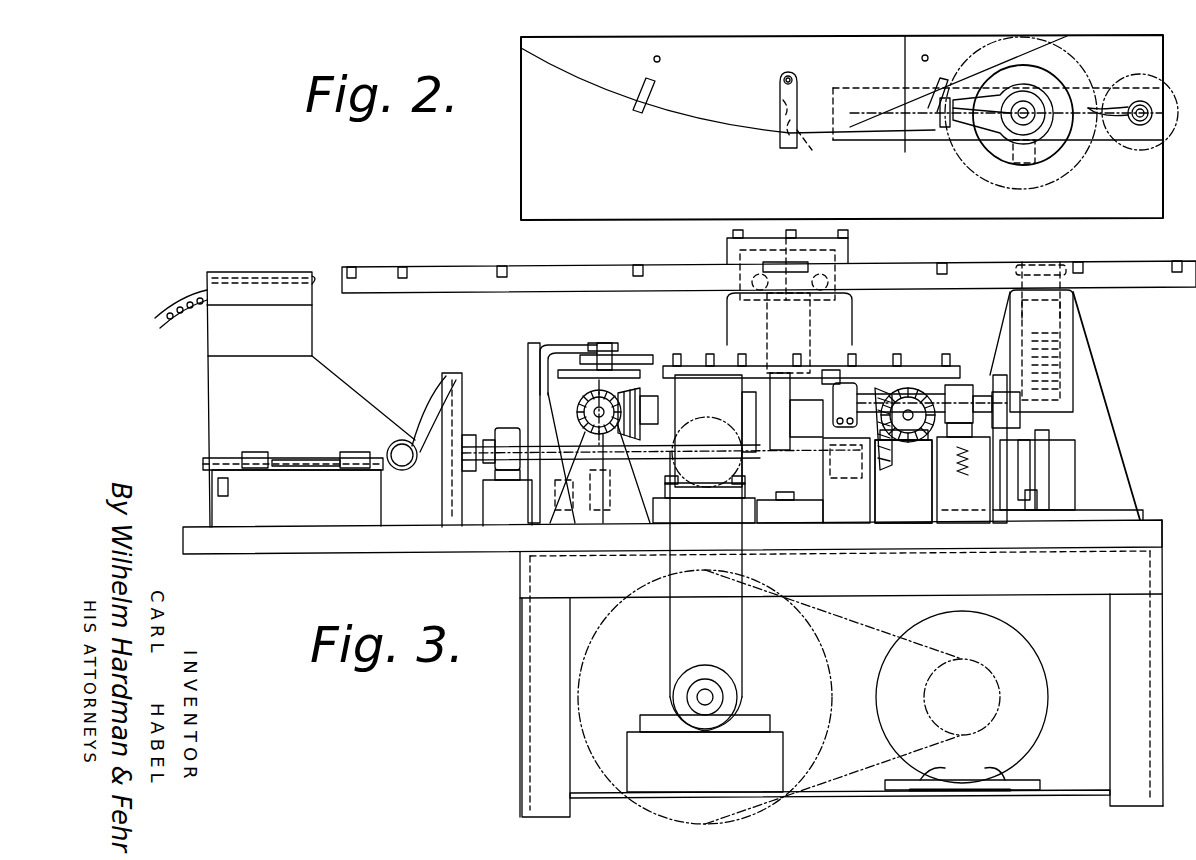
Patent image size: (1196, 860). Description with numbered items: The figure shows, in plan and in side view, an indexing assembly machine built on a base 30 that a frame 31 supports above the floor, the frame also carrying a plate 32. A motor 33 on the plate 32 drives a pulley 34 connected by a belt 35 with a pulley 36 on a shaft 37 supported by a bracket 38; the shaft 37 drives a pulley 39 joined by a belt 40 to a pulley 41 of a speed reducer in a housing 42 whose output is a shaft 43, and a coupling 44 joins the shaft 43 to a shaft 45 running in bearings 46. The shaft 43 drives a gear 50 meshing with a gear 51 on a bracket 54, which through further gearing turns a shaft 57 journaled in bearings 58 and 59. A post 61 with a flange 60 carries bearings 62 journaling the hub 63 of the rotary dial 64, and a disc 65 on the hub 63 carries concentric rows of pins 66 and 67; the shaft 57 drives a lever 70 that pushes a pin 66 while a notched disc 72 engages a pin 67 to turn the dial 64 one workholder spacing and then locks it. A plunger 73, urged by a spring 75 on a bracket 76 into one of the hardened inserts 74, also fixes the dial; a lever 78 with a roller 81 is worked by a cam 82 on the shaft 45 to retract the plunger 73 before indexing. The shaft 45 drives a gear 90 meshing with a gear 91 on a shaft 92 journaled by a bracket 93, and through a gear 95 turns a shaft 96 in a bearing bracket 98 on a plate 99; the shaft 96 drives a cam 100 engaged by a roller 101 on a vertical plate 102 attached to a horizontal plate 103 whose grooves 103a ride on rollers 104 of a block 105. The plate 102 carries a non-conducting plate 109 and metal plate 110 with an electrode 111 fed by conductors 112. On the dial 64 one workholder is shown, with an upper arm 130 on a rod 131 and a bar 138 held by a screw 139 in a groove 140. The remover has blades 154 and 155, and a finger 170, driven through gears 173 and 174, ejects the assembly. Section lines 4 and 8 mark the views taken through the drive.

In FIG. 2, the dial 64 is at (695, 120).
In FIG. 3, the dial 64 is at (1150, 262).
In FIG. 2, the groove 140 is at (652, 84).
In FIG. 3, the groove 140 is at (945, 264).
In FIG. 2, the rod 131 is at (792, 77).
In FIG. 2, the upper arm 130 is at (798, 90).
In FIG. 2, the bar 138 is at (782, 108).
In FIG. 2, the screw 139 is at (814, 151).
In FIG. 2, the upper blade 154 is at (988, 95).
In FIG. 2, the lower blade 155 is at (990, 150).
In FIG. 2, the gear 174 is at (1078, 176).
In FIG. 2, the finger 170 is at (1130, 106).
In FIG. 2, the gear 173 is at (1130, 148).
In FIG. 3, the bearings 62 is at (850, 270).
In FIG. 3, the inserts 74 is at (1028, 262).
In FIG. 3, the section line 4- 4 is at (488, 520).
In FIG. 3, the section line 8- 8 is at (770, 320).
In FIG. 3, the non-conducting plate 109 is at (300, 332).
In FIG. 3, the metal plate 110 is at (250, 290).
In FIG. 3, the electrode 111 is at (314, 272).
In FIG. 3, the conductors 112 is at (178, 300).
In FIG. 3, the vertical plate 102 is at (335, 392).
In FIG. 3, the horizontal plate 103 is at (320, 470).
In FIG. 3, the grooves 103a is at (300, 460).
In FIG. 3, the rollers 104 is at (256, 458).
In FIG. 3, the block 105 is at (292, 510).
In FIG. 3, the roller 101 is at (404, 470).
In FIG. 3, the cam 100 is at (445, 378).
In FIG. 3, the plate 99 is at (215, 540).
In FIG. 3, the gear 51 is at (578, 418).
In FIG. 3, the bearing bracket 98 is at (505, 430).
In FIG. 3, the shaft 96 is at (515, 478).
In FIG. 3, the bracket 54 is at (525, 372).
In FIG. 3, the shaft 57 is at (565, 368).
In FIG. 3, the lever 70 is at (625, 355).
In FIG. 3, the bearing 59 is at (612, 343).
In FIG. 3, the disc 72 is at (578, 400).
In FIG. 3, the gear 50 is at (640, 436).
In FIG. 3, the bearing 58 is at (599, 471).
In FIG. 3, the shaft 43 is at (610, 440).
In FIG. 3, the pulley 41 is at (718, 425).
In FIG. 3, the pins 67 is at (707, 452).
In FIG. 3, the housing 42 is at (678, 352).
In FIG. 3, the pins 66 is at (752, 375).
In FIG. 3, the coupling 44 is at (778, 380).
In FIG. 3, the disc 65 is at (832, 370).
In FIG. 3, the bearings 46 is at (845, 392).
In FIG. 3, the gear 90 is at (890, 388).
In FIG. 3, the shaft 92 is at (915, 442).
In FIG. 3, the gear 91 is at (940, 432).
In FIG. 3, the shaft 45 is at (958, 386).
In FIG. 3, the gear 95 is at (903, 476).
In FIG. 3, the bracket 93 is at (905, 510).
In FIG. 3, the post 61 is at (806, 488).
In FIG. 3, the flange 60 is at (810, 512).
In FIG. 3, the plunger 73 is at (1050, 322).
In FIG. 3, the spring 75 is at (1060, 360).
In FIG. 3, the cam 82 is at (1020, 396).
In FIG. 3, the bracket 76 is at (1130, 470).
In FIG. 3, the lever 78 is at (1040, 450).
In FIG. 3, the roller 81 is at (1030, 486).
In FIG. 3, the base 30 is at (1150, 532).
In FIG. 3, the frame 31 is at (1150, 610).
In FIG. 3, the belt 40 is at (668, 652).
In FIG. 3, the pulley 36 is at (832, 718).
In FIG. 3, the pulley 39 is at (708, 665).
In FIG. 3, the shaft 37 is at (708, 697).
In FIG. 3, the bracket 38 is at (640, 722).
In FIG. 3, the motor 33 is at (1022, 635).
In FIG. 3, the pulley 34 is at (924, 690).
In FIG. 3, the belt 35 is at (847, 618).
In FIG. 3, the plate 32 is at (1080, 793).
In FIG. 3, the hub 63 is at (735, 308).